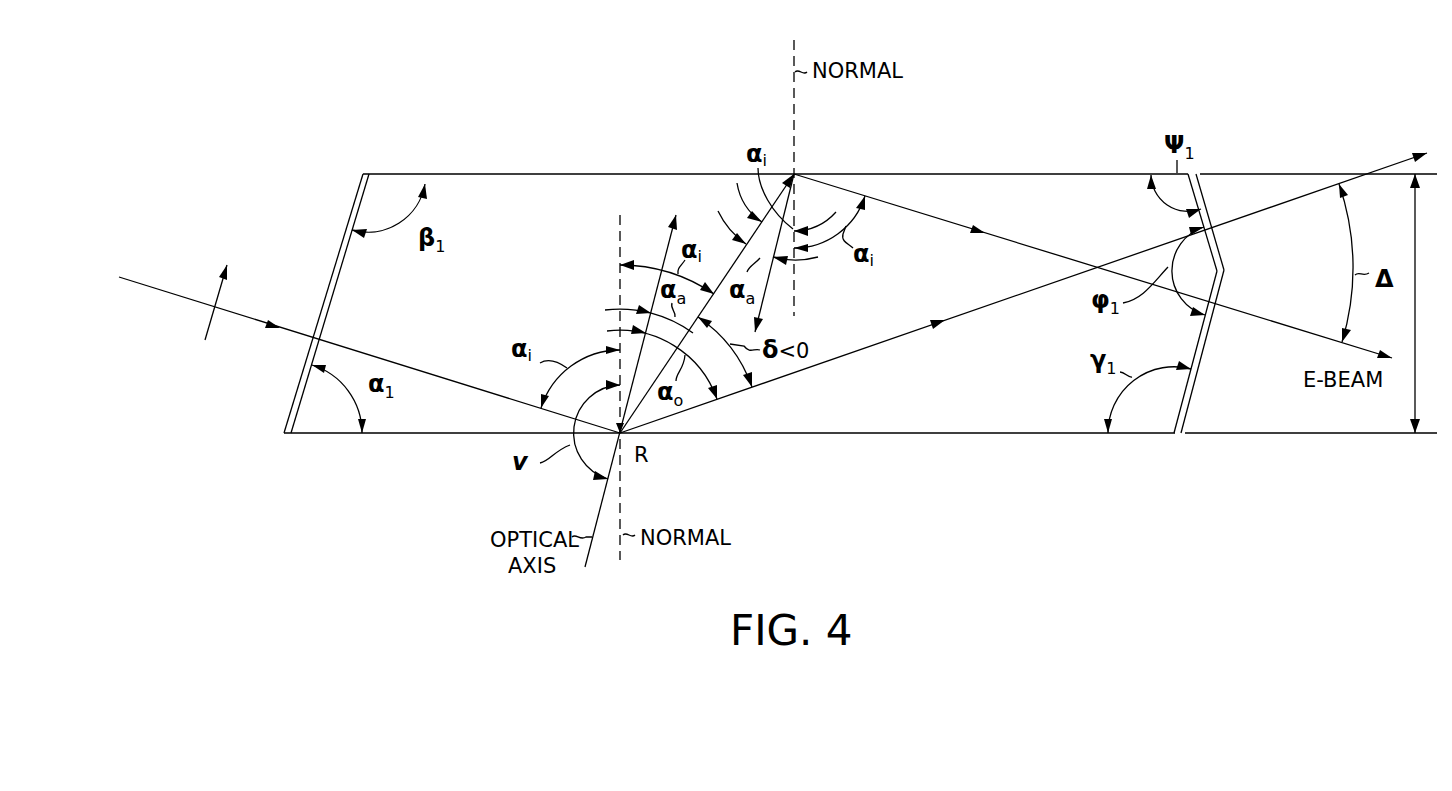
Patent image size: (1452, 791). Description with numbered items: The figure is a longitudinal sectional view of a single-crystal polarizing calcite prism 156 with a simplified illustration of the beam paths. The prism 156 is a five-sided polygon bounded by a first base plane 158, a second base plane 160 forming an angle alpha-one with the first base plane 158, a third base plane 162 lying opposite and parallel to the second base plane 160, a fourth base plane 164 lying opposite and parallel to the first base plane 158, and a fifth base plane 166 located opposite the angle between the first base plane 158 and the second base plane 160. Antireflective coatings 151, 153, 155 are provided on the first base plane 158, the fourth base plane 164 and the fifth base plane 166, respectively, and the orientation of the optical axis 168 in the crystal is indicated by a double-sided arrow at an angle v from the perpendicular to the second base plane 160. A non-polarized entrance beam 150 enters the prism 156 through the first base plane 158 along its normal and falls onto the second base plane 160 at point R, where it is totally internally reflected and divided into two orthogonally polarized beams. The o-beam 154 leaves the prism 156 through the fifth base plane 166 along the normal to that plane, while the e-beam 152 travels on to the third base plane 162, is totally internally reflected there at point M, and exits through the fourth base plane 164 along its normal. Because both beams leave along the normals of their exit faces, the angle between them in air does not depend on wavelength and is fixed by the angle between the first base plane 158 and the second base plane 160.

The non-polarized entrance beam 150 is at (163, 292).
The antireflective coating 151 is at (297, 387).
The e-beam 152 is at (737, 255).
The antireflective coating 153 is at (1197, 363).
The o-beam 154 is at (1275, 203).
The antireflective coating 155 is at (1224, 247).
The prism 156 is at (1015, 105).
The first base plane 158 is at (335, 292).
The second base plane 160 is at (425, 435).
The third base plane 162 is at (499, 173).
The fourth base plane 164 is at (1198, 342).
The fifth base plane 166 is at (1198, 218).
The optical axis 168 is at (665, 248).